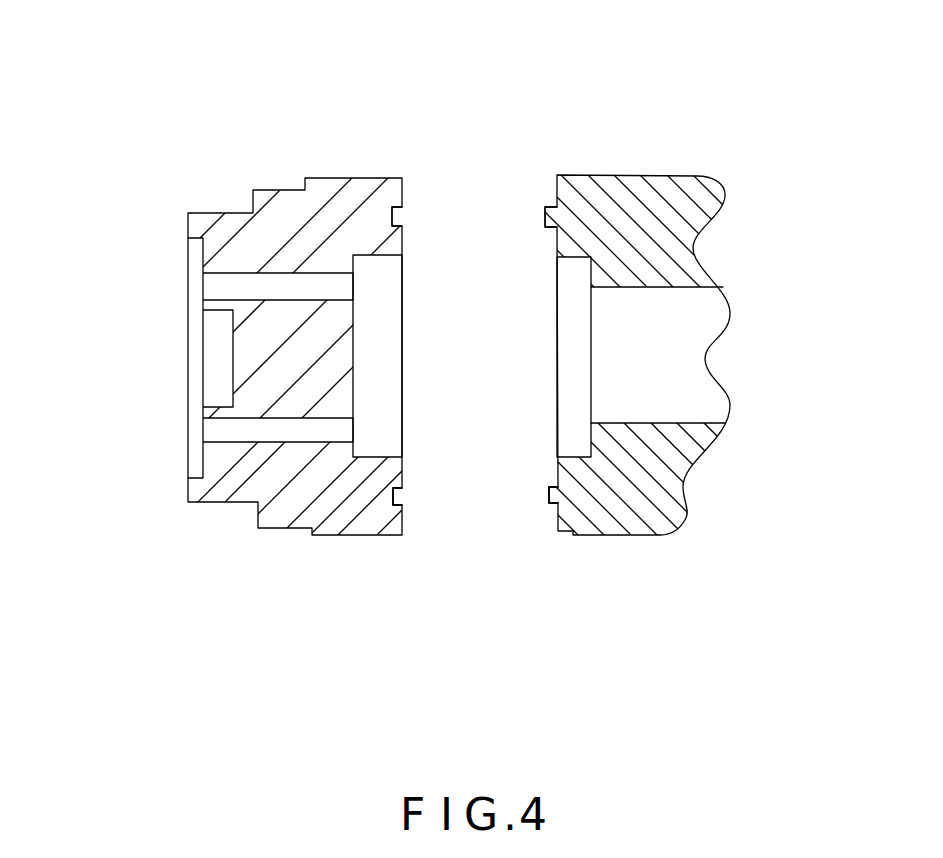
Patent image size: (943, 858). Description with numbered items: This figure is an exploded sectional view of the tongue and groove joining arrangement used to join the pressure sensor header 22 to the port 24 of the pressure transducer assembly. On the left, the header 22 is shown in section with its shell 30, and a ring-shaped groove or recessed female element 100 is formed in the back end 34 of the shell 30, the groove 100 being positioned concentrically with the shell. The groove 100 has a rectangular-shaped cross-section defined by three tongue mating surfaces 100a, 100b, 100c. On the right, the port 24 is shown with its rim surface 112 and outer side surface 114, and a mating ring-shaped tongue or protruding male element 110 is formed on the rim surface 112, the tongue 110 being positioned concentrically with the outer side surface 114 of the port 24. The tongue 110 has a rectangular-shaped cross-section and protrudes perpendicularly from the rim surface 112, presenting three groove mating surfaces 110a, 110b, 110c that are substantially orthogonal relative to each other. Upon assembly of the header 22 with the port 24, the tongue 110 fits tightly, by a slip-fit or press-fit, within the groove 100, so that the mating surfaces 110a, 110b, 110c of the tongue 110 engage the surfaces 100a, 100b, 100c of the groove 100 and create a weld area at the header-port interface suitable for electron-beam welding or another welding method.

The pressure sensor header 22 is at (153, 218).
The port 24 is at (718, 157).
The shell 30 is at (253, 190).
The back end 34 is at (428, 360).
The groove 100 is at (406, 205).
The tongue mating surface 100a is at (401, 489).
The tongue mating surface 100b is at (402, 498).
The tongue mating surface 100c is at (402, 505).
The tongue 110 is at (545, 213).
The groove mating surface 110a is at (551, 486).
The groove mating surface 110b is at (548, 495).
The groove mating surface 110c is at (549, 508).
The rim surface 112 is at (556, 239).
The outer side surface 114 is at (636, 174).